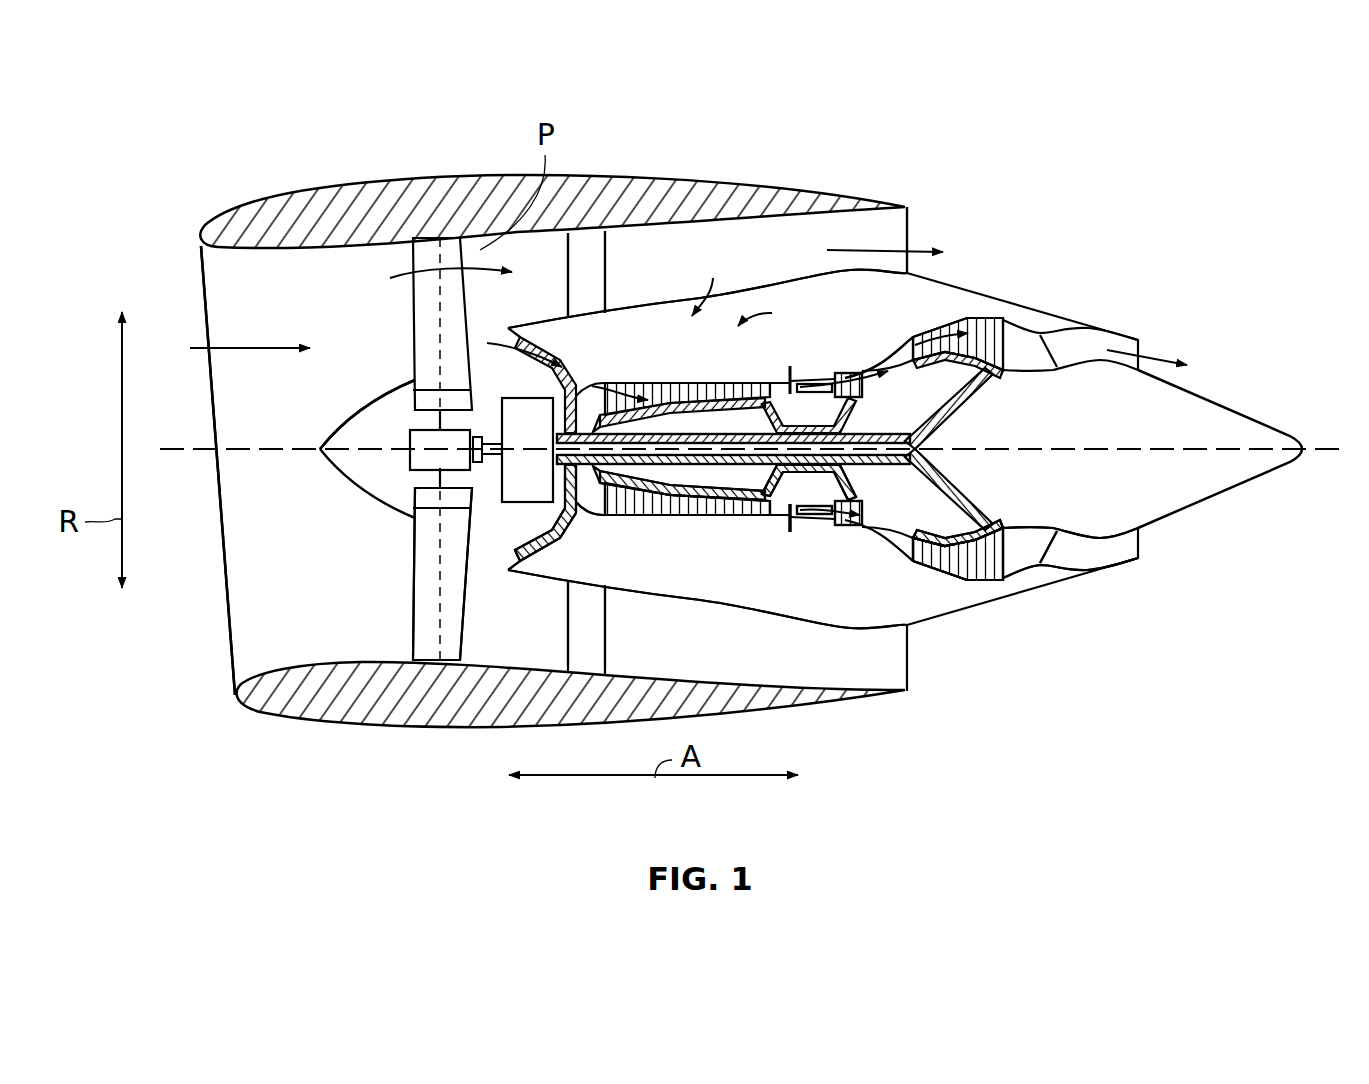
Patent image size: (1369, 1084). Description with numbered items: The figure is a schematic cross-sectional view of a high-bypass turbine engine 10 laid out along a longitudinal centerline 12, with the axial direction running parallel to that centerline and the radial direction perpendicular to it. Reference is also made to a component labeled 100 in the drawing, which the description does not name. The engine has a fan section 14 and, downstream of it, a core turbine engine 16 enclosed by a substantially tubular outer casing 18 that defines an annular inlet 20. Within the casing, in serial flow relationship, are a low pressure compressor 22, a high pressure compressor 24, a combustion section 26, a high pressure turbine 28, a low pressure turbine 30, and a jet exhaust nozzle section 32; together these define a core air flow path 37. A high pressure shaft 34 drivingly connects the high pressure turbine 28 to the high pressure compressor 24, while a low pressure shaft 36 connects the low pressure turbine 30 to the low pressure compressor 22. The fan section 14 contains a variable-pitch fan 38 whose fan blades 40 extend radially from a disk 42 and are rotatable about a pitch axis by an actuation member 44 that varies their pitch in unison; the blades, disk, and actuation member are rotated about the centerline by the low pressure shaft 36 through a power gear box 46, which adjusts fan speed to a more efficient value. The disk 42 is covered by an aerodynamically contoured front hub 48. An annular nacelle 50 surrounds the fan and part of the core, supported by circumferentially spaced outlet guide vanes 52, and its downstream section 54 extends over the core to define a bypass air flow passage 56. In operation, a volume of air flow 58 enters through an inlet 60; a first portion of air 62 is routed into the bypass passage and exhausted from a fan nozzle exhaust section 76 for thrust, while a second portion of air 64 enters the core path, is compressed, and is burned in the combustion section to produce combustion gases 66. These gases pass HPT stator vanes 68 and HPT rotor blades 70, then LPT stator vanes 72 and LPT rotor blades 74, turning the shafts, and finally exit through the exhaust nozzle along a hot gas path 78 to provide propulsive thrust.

The turbine engine 10 is at (1082, 133).
The longitudinal centerline 12 is at (1053, 444).
The fan section 14 is at (322, 262).
The core turbine engine 16 is at (749, 285).
The outer casing 18 is at (737, 613).
The annular inlet 20 is at (517, 557).
The low pressure compressor 22 is at (560, 532).
The high pressure compressor 24 is at (660, 497).
The combustion section 26 is at (790, 515).
The high pressure turbine 28 is at (874, 521).
The low pressure turbine 30 is at (993, 578).
The jet exhaust nozzle section 32 is at (1050, 562).
The high pressure shaft 34 is at (891, 463).
The low pressure shaft 36 is at (891, 437).
The core air flow path 37 is at (598, 505).
The fan 38 is at (380, 508).
The fan blades 40 is at (413, 567).
The disk 42 is at (425, 396).
The actuation member 44 is at (410, 447).
The power gear box 46 is at (593, 384).
The front hub 48 is at (338, 470).
The nacelle 50 is at (418, 727).
The outlet guide vanes 52 is at (607, 272).
The downstream section of the nacelle 54 is at (860, 205).
The bypass air flow passage 56 is at (776, 264).
The air flow 58 is at (240, 348).
The inlet 60 is at (227, 622).
The first portion of air 62 is at (405, 282).
The second portion of air 64 is at (487, 345).
The combustion gases 66 is at (953, 320).
The HPT stator vanes 68 is at (827, 522).
The HPT rotor blades 70 is at (840, 530).
The LPT stator vanes 72 is at (915, 575).
The LPT rotor blades 74 is at (935, 578).
The fan nozzle exhaust section 76 is at (897, 232).
The hot gas path 78 is at (896, 352).
The gearbox / accessory 100 is at (480, 433).